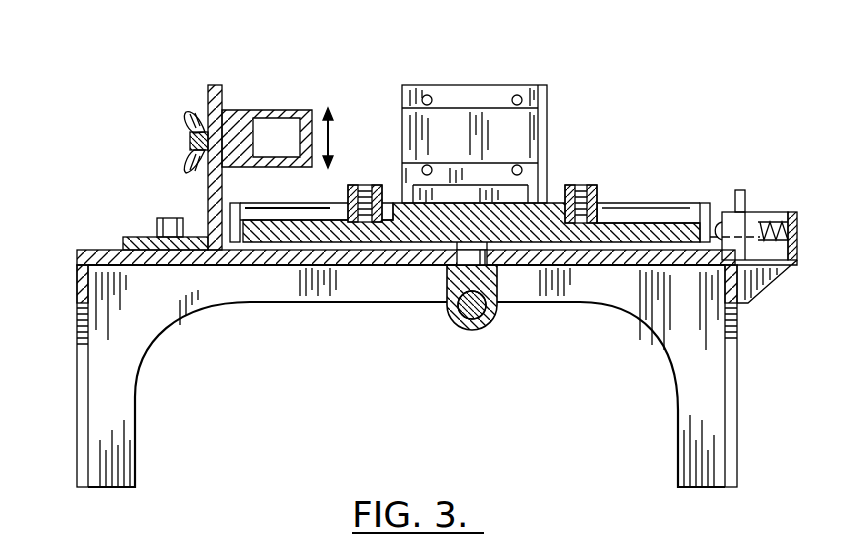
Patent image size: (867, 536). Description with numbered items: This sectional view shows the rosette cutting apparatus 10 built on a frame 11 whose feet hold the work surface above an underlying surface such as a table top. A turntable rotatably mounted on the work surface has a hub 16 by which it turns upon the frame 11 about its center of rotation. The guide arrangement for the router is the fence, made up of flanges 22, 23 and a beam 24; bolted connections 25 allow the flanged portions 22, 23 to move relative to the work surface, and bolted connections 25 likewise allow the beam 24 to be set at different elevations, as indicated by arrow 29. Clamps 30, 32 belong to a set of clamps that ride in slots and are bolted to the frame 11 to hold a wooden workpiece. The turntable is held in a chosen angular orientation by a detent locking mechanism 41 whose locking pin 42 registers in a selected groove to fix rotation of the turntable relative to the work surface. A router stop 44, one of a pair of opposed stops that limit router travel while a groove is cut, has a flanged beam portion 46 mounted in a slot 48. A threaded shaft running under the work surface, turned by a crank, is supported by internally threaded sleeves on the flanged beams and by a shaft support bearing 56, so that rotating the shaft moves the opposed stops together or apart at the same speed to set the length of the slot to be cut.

The rosette cutting apparatus 10 is at (117, 68).
The frame 11 is at (77, 355).
The hub 16 is at (465, 258).
The flange 22 is at (140, 240).
The flange 23 is at (208, 95).
The beam 24 is at (272, 110).
The bolted connection 25 is at (190, 143).
The arrow 29 is at (332, 136).
The clamp 30 is at (595, 188).
The clamp 32 is at (378, 188).
The detent locking mechanism 41 is at (785, 213).
The locking pin 42 is at (716, 225).
The router stop 44 is at (535, 140).
The flanged beam portion 46 is at (515, 86).
The slot 48 is at (497, 318).
The shaft support bearing 56 is at (472, 330).